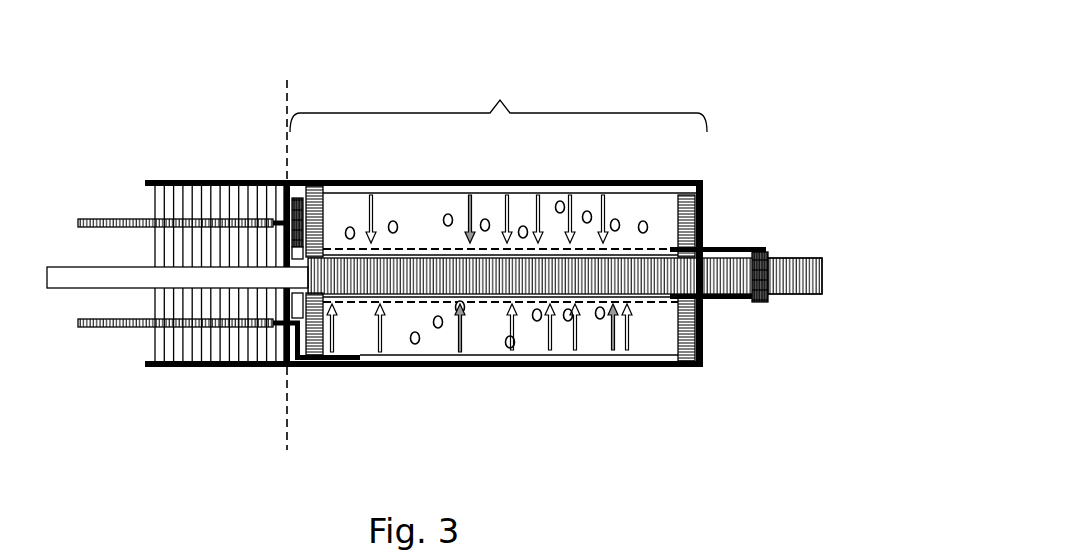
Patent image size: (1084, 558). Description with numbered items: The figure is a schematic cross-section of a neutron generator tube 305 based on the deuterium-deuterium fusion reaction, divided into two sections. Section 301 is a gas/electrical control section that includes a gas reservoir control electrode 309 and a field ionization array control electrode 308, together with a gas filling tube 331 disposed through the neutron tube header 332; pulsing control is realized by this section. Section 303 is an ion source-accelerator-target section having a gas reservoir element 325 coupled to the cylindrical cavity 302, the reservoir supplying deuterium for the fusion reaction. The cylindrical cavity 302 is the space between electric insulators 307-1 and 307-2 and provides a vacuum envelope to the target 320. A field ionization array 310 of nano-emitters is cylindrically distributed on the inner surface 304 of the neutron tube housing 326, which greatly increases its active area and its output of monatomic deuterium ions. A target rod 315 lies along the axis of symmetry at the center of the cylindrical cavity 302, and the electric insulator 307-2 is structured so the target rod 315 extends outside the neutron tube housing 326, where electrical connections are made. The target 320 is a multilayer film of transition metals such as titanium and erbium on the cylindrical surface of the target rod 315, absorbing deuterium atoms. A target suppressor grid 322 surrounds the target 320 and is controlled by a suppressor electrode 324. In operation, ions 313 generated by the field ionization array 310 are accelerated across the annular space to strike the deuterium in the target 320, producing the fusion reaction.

The neutron generator tube 305 is at (650, 60).
The gas/electrical control section 301 is at (243, 98).
The ion source-accelerator-target section 303 is at (387, 98).
The neutron tube header 332 is at (213, 250).
The gas reservoir control electrode 309 is at (115, 220).
The field ionization array control electrode 308 is at (115, 332).
The gas filling tube 331 is at (93, 268).
The gas reservoir element 325 is at (297, 212).
The electric insulator 307-1 is at (313, 197).
The electric insulator 307-2 is at (687, 193).
The field ionization array 310 is at (362, 190).
The target suppressor grid 322 is at (433, 249).
The target 320 is at (447, 297).
The ions 313 is at (445, 213).
The inner surface 304 is at (578, 195).
The cylindrical cavity 302 is at (485, 338).
The neutron tube housing 326 is at (638, 369).
The target rod 315 is at (795, 267).
The suppressor electrode 324 is at (760, 297).